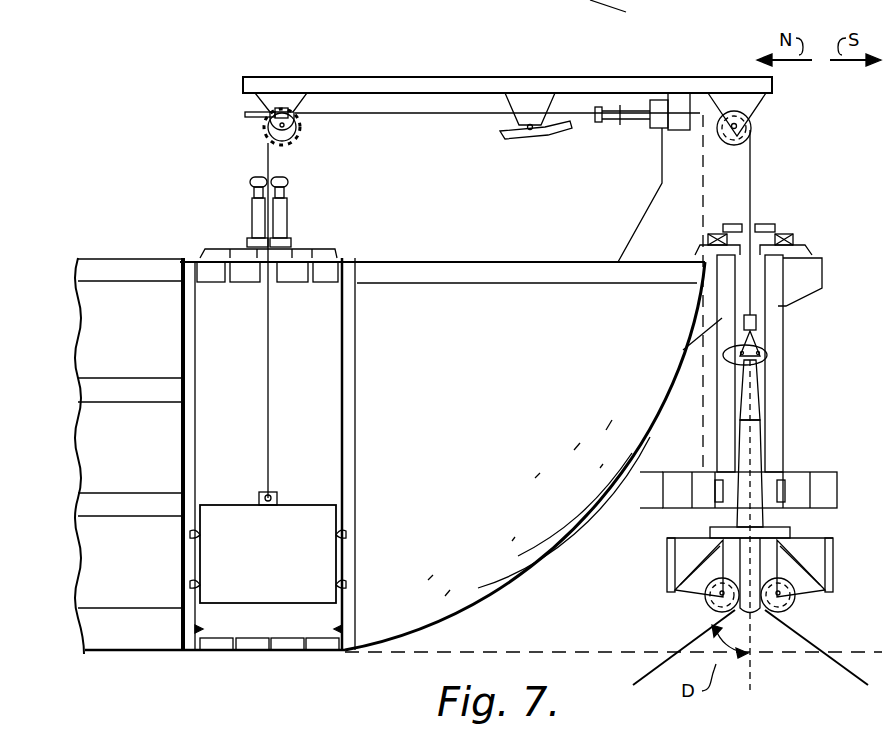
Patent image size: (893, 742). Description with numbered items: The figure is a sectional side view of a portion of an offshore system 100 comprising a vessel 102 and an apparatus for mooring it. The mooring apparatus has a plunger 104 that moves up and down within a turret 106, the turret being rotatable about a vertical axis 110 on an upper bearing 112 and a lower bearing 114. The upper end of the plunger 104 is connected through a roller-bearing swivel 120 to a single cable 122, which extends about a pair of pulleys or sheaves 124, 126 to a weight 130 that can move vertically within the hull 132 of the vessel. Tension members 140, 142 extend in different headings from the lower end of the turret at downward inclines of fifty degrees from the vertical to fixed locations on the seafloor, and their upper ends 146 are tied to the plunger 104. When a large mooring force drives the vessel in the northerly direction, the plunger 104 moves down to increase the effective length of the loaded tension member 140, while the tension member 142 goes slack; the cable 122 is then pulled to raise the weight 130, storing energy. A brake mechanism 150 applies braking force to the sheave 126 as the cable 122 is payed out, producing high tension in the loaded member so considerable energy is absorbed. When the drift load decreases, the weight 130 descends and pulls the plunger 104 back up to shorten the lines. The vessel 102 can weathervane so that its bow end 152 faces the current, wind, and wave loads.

The system 100 is at (496, 66).
The vessel 102 is at (520, 250).
The plunger 104 is at (763, 341).
The turret 106 is at (769, 420).
The vertical axis 110 is at (758, 675).
The upper bearing 112 is at (781, 232).
The lower bearing 114 is at (790, 485).
The roller-bearing swivel 120 is at (758, 323).
The cable 122 is at (752, 182).
The pulley or sheave 124 is at (756, 132).
The pulley or sheave 126 is at (298, 140).
The weight 130 is at (338, 505).
The hull 132 is at (398, 260).
The tension member 140 is at (800, 634).
The tension member 142 is at (662, 642).
The upper ends of tension members 146 is at (762, 384).
The brake mechanism 150 is at (244, 134).
The bow end 152 is at (462, 604).